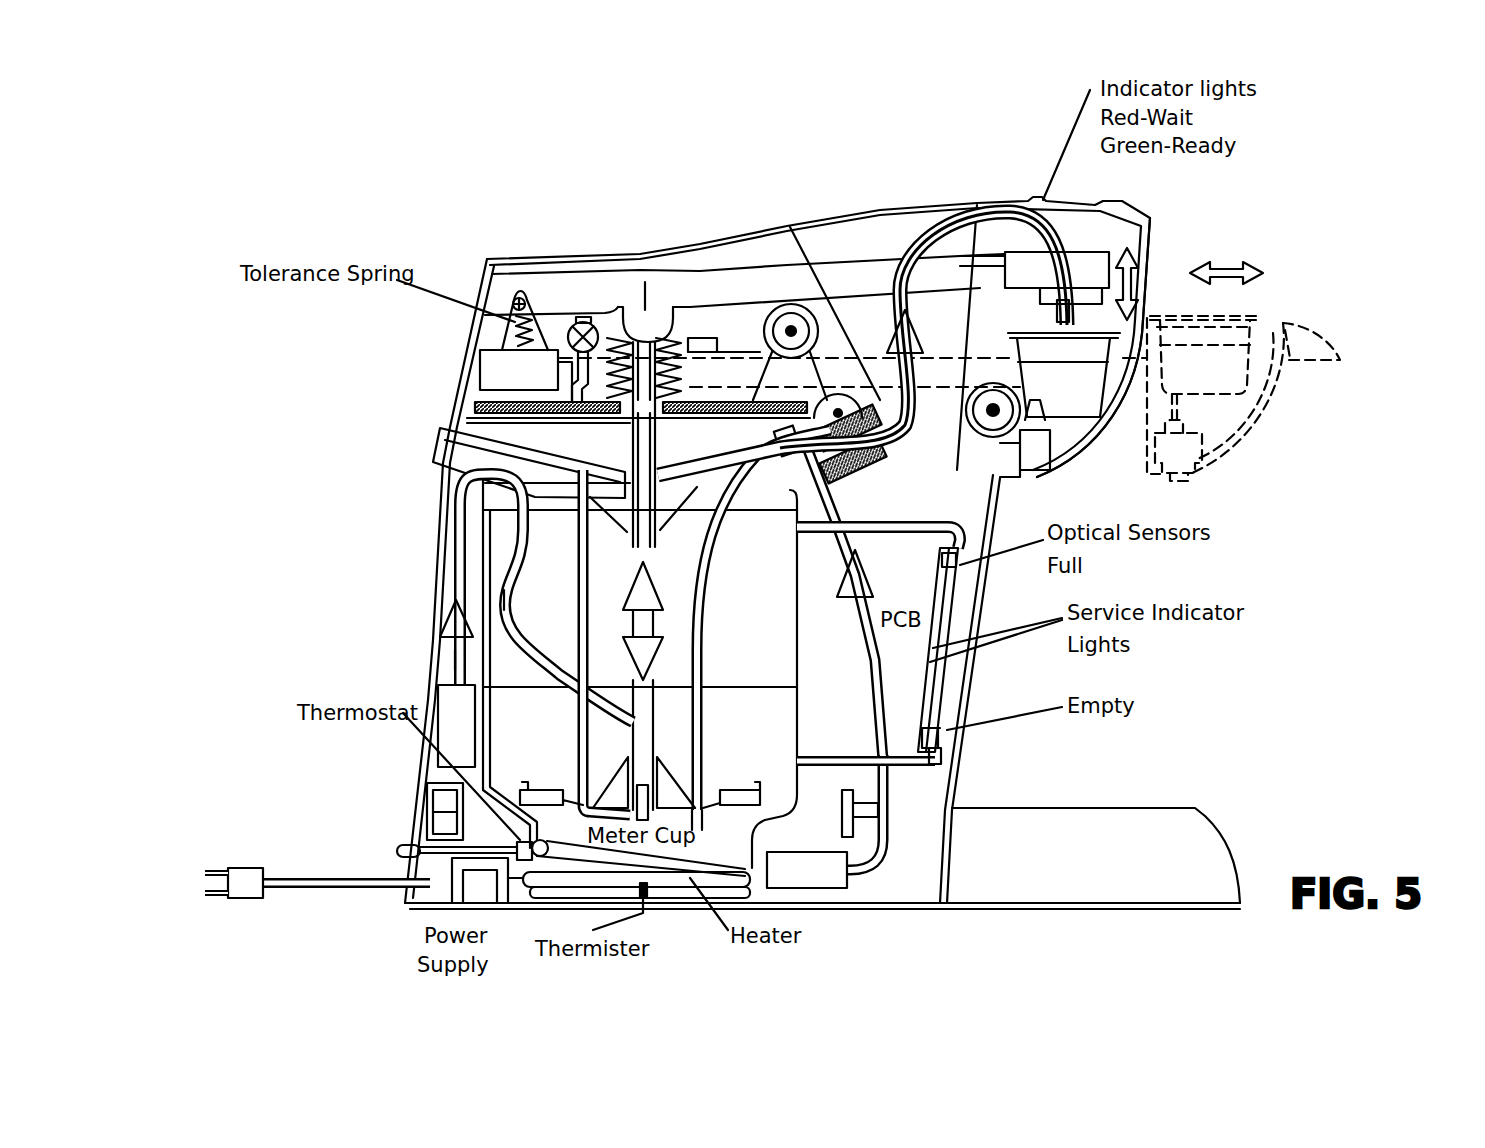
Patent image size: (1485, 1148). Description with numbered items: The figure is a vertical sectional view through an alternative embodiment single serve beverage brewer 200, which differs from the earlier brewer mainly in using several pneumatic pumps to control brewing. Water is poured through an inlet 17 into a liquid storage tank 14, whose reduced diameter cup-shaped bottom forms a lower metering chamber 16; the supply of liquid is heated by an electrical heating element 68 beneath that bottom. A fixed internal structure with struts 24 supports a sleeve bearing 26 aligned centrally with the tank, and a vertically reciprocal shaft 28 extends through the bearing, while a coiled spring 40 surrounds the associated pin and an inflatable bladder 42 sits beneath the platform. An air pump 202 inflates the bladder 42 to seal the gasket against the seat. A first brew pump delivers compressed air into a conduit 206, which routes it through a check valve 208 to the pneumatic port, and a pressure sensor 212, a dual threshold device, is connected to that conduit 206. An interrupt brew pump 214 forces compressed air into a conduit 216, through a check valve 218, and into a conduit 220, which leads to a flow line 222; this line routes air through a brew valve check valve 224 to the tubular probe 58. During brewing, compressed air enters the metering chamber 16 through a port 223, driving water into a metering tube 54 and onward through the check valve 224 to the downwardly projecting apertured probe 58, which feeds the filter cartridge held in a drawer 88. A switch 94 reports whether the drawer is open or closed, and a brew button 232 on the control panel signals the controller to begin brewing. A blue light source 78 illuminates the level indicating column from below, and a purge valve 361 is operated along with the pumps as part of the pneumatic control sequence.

The single serve beverage brewer 200 is at (1268, 150).
The brew button 232 is at (1130, 208).
The purge valve 361 is at (567, 327).
The coiled spring 40 is at (603, 320).
The switch 94 is at (693, 337).
The check valve 224 is at (895, 325).
The air pump 202 is at (508, 370).
The inflatable bladder 42 is at (478, 402).
The tubular probe 58 is at (1067, 318).
The inlet 17 is at (450, 447).
The drawer 88 is at (1085, 448).
The check valve 218 is at (443, 607).
The conduit 216 is at (457, 660).
The interrupt brew pump 214 is at (447, 715).
The check valve 208 is at (863, 563).
The struts 24 is at (553, 503).
The sleeve bearing 26 is at (653, 547).
The vertically reciprocal shaft 28 is at (640, 557).
The conduit 220 is at (510, 597).
The flow line 222 is at (707, 628).
The liquid storage tank 14 is at (522, 727).
The light source 78 is at (937, 768).
The metering tube 54 is at (703, 830).
The metering chamber 16 is at (740, 863).
The port 223 is at (583, 808).
The pressure sensor 212 is at (847, 818).
The conduit 206 is at (878, 840).
The electrical heating element 68 is at (653, 880).